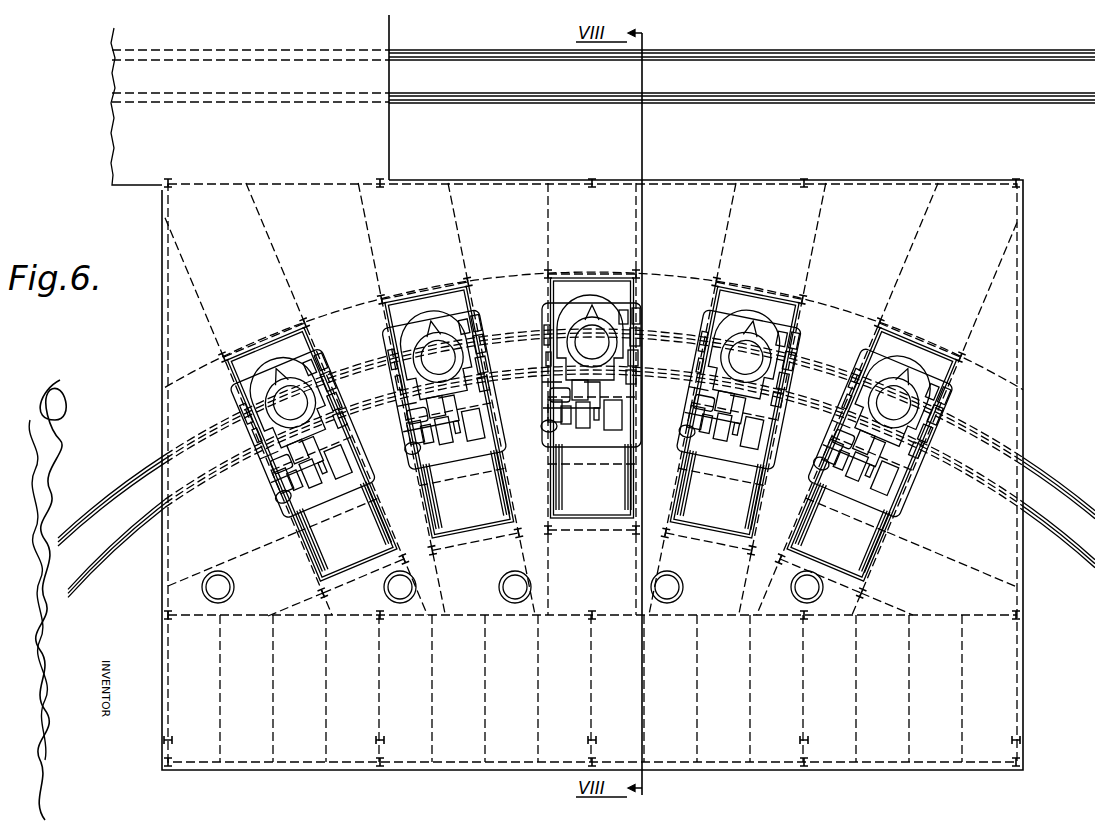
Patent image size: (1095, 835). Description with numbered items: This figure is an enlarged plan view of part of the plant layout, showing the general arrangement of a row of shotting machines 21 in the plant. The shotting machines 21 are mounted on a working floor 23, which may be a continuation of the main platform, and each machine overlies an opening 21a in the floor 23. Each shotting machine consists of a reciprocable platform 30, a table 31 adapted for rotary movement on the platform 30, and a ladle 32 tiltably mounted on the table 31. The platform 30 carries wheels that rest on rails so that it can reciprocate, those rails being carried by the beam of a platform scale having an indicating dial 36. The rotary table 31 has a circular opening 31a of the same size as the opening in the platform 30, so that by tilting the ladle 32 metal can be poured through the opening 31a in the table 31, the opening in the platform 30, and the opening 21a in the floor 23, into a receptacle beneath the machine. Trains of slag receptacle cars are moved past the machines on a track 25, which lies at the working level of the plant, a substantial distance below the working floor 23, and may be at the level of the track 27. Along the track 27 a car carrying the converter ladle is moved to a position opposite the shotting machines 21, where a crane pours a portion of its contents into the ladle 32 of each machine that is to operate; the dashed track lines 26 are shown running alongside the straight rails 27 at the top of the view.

The shotting machine 21 is at (900, 358).
The opening in the floor 21a is at (933, 353).
The working floor 23 is at (1010, 212).
The track 25 is at (1044, 521).
The track 26 is at (384, 73).
The track 27 is at (903, 66).
The reciprocable platform 30 is at (862, 357).
The rotary table 31 is at (948, 405).
The circular opening in the table 31a is at (945, 373).
The ladle 32 is at (842, 397).
The indicating dial 36 is at (620, 584).